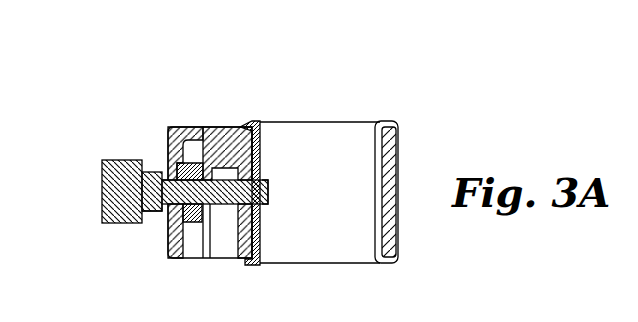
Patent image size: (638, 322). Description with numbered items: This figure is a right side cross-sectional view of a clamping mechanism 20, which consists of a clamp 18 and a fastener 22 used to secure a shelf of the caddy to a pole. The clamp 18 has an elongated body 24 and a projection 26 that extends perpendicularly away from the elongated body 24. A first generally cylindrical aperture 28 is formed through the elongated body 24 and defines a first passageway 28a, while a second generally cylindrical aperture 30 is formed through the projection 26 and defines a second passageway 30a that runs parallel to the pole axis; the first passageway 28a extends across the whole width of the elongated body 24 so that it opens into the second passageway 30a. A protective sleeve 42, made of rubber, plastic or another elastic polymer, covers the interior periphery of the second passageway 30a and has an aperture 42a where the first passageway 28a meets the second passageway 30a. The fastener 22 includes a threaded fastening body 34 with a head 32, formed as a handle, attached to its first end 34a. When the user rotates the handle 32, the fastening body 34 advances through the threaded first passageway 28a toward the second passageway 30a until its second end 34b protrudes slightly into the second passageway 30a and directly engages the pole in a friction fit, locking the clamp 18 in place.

The clamping mechanism 20 is at (440, 78).
The clamp 18 is at (184, 175).
The elongated body 24 is at (217, 128).
The first passageway 28a is at (197, 163).
The first generally cylindrical aperture 28 is at (170, 210).
The fastening body 34 is at (165, 178).
The first end 34a is at (160, 172).
The second end 34b is at (270, 205).
The head 32 is at (110, 182).
The fastener 22 is at (157, 212).
The protective sleeve 42 is at (265, 167).
The aperture 42a is at (235, 251).
The second generally cylindrical aperture 30 is at (348, 187).
The second passageway 30a is at (335, 243).
The projection 26 is at (392, 154).